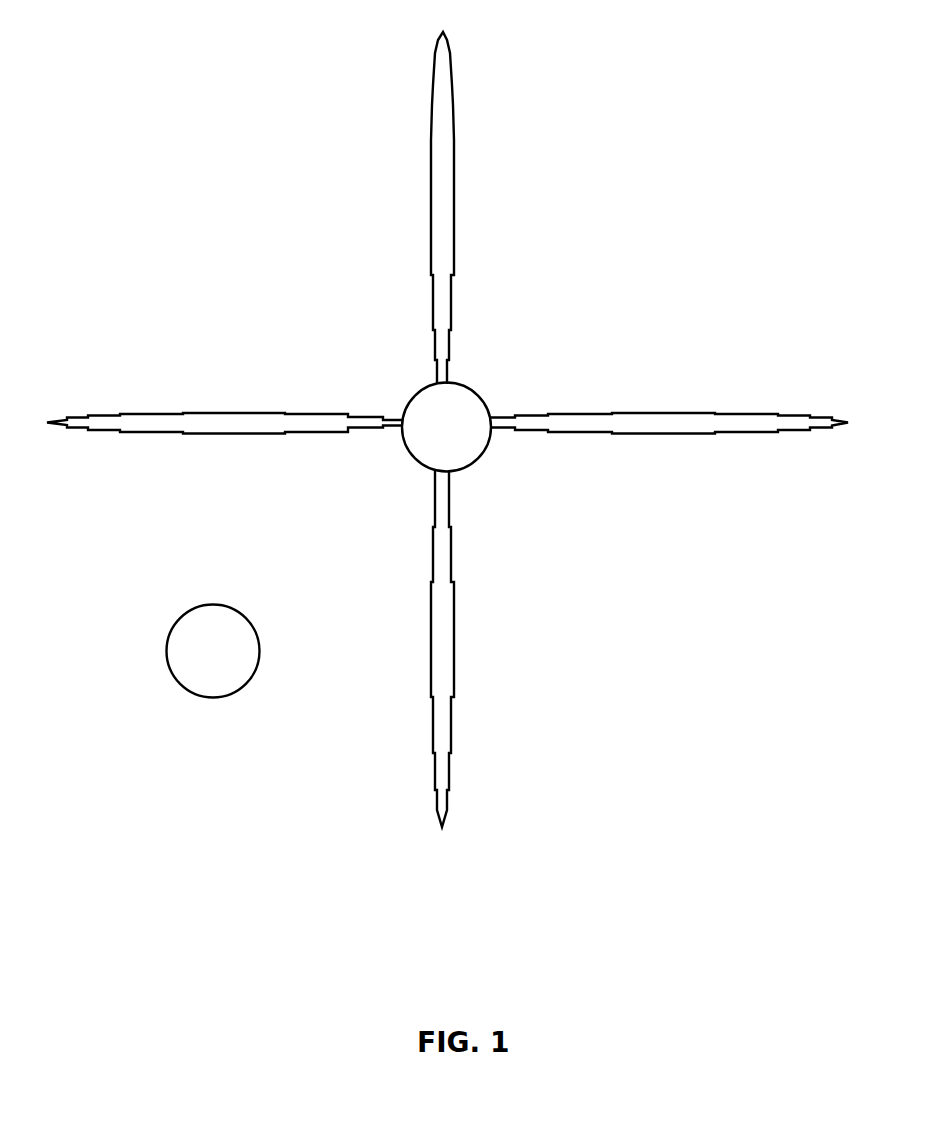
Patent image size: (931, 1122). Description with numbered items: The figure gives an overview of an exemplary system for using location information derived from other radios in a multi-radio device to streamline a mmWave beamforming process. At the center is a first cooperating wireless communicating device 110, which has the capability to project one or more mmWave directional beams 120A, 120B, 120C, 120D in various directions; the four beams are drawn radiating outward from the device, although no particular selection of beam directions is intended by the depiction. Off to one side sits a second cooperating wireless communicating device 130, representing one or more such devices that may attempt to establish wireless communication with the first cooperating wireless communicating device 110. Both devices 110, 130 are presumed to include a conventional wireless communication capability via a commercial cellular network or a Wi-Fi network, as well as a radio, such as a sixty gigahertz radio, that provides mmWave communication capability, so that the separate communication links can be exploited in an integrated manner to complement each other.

The first cooperating wireless communicating device 110 is at (446, 427).
The mmWave directional beam 120A is at (486, 208).
The mmWave directional beam 120B is at (669, 402).
The mmWave directional beam 120C is at (490, 649).
The mmWave directional beam 120D is at (224, 398).
The second cooperating wireless communicating device 130 is at (213, 651).